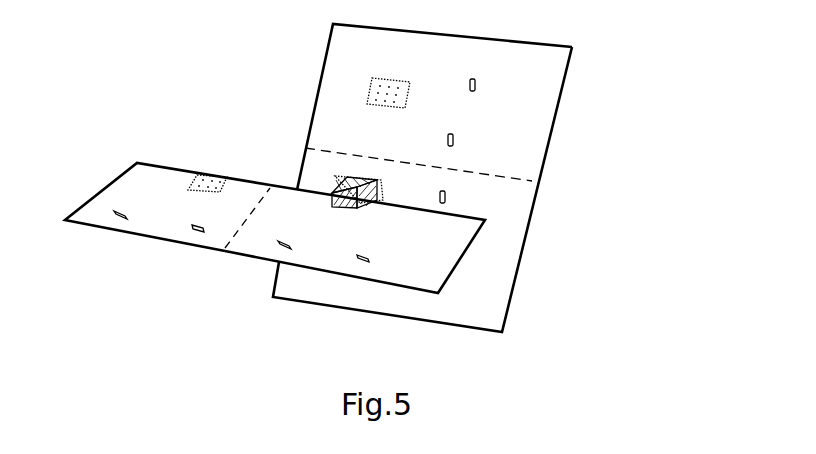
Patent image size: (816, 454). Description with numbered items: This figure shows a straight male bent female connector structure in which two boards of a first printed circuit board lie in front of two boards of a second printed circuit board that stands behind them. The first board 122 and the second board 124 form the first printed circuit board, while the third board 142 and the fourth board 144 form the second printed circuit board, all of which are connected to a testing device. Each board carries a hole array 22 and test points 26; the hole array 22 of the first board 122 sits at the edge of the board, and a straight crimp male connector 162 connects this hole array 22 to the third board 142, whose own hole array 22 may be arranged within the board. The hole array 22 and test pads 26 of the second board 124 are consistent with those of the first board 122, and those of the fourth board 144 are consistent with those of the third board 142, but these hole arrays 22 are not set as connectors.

The hole array 22 is at (367, 88).
The test point 26 is at (358, 263).
The first board 122 is at (437, 257).
The second board 124 is at (128, 185).
The third board 142 is at (538, 77).
The fourth board 144 is at (502, 267).
The straight crimp male connector 162 is at (332, 193).